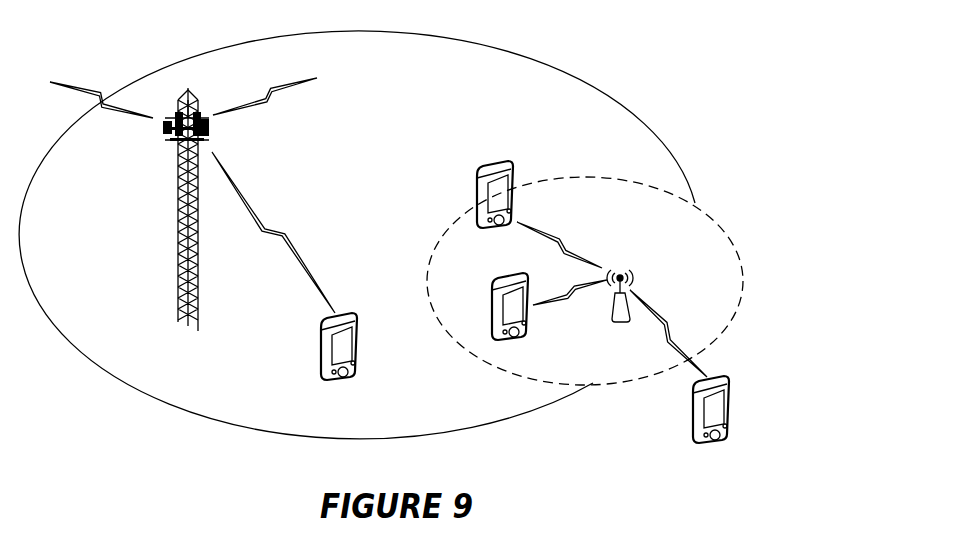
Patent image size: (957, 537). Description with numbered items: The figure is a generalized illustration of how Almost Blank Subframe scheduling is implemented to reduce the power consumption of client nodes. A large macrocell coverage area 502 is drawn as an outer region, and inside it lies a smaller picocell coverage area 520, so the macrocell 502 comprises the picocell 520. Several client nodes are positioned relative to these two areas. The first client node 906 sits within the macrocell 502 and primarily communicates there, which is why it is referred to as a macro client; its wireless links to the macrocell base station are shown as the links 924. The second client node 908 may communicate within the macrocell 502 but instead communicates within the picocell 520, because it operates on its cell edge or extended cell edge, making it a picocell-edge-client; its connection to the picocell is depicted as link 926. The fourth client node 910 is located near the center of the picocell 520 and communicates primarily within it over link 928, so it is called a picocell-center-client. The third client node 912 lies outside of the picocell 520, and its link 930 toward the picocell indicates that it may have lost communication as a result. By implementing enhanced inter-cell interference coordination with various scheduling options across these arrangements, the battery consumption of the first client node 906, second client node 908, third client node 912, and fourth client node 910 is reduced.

The macrocell coverage area 502 is at (425, 104).
The picocell coverage area 520 is at (648, 251).
The client node '1' 906 is at (358, 360).
The client node '2' 908 is at (493, 158).
The client node '4' 910 is at (530, 318).
The client node '3' 912 is at (732, 408).
The macrocell wireless links 924 is at (128, 110).
The picocell wireless link to client 2 926 is at (533, 235).
The picocell wireless link to client 4 928 is at (556, 306).
The picocell wireless link to client 3 930 is at (650, 310).